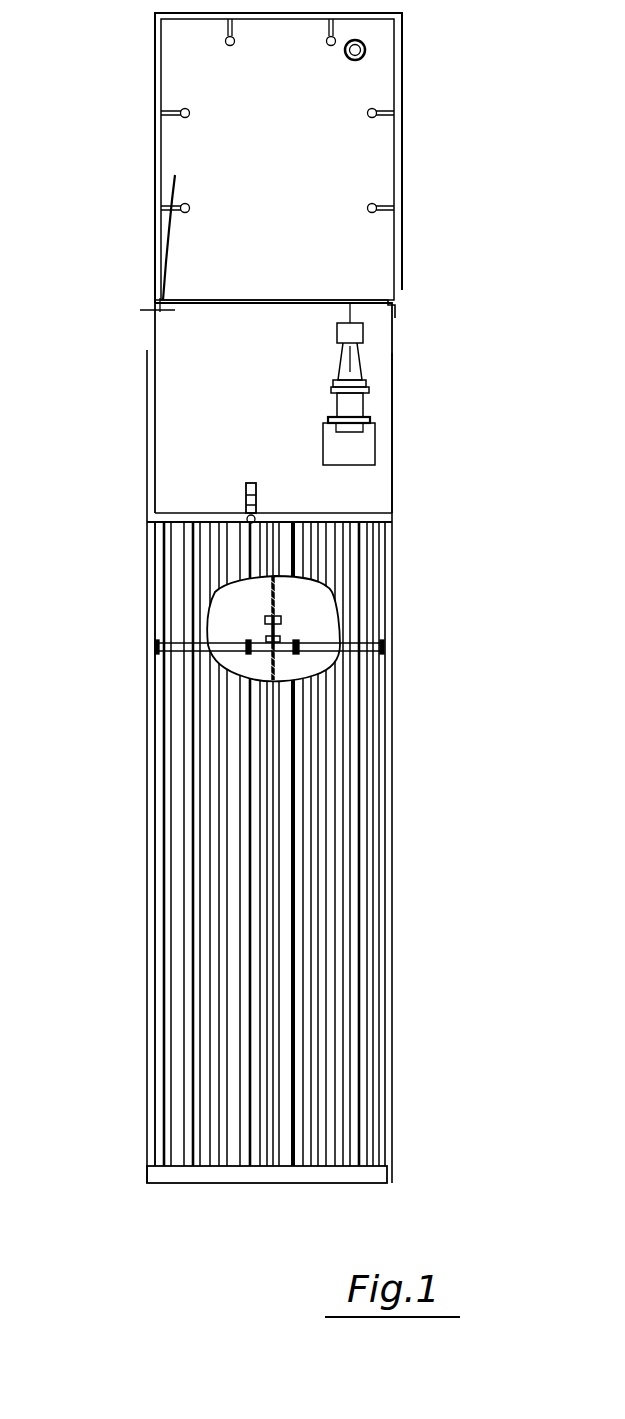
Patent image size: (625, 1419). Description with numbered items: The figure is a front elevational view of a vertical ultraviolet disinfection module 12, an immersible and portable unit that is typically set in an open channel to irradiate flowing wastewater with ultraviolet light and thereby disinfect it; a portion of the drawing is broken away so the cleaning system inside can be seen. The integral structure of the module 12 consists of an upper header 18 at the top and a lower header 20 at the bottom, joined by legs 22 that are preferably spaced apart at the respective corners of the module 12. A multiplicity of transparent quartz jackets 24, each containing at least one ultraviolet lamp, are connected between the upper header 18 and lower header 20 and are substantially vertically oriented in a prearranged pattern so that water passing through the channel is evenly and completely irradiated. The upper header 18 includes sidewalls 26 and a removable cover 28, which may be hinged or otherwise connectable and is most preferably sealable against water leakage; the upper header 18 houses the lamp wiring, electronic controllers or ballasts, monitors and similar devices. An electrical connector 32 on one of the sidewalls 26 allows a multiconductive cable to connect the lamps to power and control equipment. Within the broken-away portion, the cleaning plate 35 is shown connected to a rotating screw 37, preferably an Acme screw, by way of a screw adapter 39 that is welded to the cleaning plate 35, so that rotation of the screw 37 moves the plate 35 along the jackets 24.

The disinfection module 12 is at (133, 1152).
The upper header 18 is at (393, 438).
The lower header 20 is at (228, 1182).
The legs 22 is at (390, 855).
The transparent quartz jackets 24 is at (355, 1090).
The sidewalls 26 is at (296, 360).
The removable cover 28 is at (296, 150).
The electrical connector 32 is at (370, 388).
The cleaning plate 35 is at (340, 645).
The rotating screw 37 is at (277, 603).
The screw adapter 39 is at (290, 647).